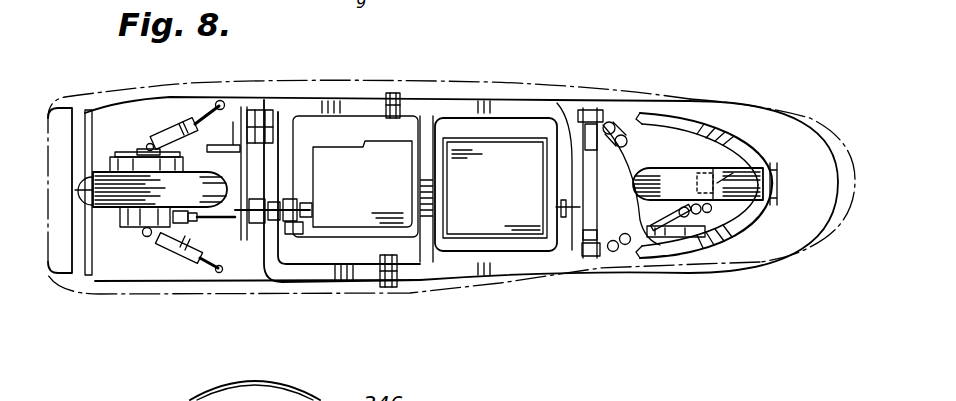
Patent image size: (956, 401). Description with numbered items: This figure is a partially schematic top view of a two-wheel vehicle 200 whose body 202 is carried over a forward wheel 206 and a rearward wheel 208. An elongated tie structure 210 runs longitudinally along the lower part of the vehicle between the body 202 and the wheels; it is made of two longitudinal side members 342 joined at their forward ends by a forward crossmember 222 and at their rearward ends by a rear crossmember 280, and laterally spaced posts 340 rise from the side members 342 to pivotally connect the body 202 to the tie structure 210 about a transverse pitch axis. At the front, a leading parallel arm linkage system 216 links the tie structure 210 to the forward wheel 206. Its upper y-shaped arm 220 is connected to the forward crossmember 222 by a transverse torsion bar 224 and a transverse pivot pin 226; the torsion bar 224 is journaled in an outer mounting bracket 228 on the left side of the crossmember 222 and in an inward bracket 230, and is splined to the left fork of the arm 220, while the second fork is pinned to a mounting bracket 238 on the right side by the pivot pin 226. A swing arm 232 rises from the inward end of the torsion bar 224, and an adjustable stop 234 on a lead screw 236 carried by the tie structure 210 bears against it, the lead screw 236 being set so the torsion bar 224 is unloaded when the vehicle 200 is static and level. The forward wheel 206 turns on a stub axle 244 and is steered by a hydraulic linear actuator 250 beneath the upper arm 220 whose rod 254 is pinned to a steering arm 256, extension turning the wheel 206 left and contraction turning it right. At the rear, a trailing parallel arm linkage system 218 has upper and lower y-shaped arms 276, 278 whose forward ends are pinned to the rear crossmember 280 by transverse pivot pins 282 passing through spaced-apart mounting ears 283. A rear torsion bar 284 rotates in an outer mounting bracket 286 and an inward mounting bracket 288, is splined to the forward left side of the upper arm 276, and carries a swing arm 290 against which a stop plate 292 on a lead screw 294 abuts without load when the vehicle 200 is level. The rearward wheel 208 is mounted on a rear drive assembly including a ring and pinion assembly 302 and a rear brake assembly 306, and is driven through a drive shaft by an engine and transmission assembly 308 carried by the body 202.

The two-wheel vehicle 200 is at (216, 75).
The body 202 is at (490, 76).
The forward wheel 206 is at (719, 163).
The rearward wheel 208 is at (82, 170).
The tie structure 210 is at (488, 292).
The leading parallel arm linkage system 216 is at (606, 262).
The trailing parallel arm linkage system 218 is at (233, 122).
The upper y-shaped arm 220 is at (618, 254).
The forward crossmember 222 is at (568, 245).
The transverse torsion bar 224 is at (578, 115).
The transverse pivot pin 226 is at (595, 250).
The outer mounting bracket 228 is at (150, 147).
The inward bracket 230 is at (585, 190).
The swing arm 232 is at (648, 145).
The adjustable stop 234 is at (593, 247).
The lead screw 236 is at (553, 207).
The mounting bracket 238 is at (609, 274).
The stub axle 244 is at (751, 157).
The hydraulic linear actuator 250 is at (661, 237).
The rod 254 is at (691, 243).
The steering arm 256 is at (719, 245).
The upper y-shaped arm 276 is at (240, 260).
The lower y-shaped arm 278 is at (173, 258).
The rear crossmember 280 is at (290, 130).
The transverse pivot pins 282 is at (267, 245).
The mounting ears 283 is at (312, 252).
The torsion bar 284 is at (257, 167).
The outer mounting bracket 286 is at (262, 170).
The inward mounting bracket 288 is at (255, 195).
The swing arm 290 is at (265, 194).
The stop plate 292 is at (255, 237).
The lead screw 294 is at (295, 220).
The ring and pinion assembly 302 is at (127, 228).
The rear brake assembly 306 is at (127, 157).
The engine and transmission assembly 308 is at (410, 173).
The posts 340 is at (412, 280).
The longitudinal side members 342 is at (350, 103).